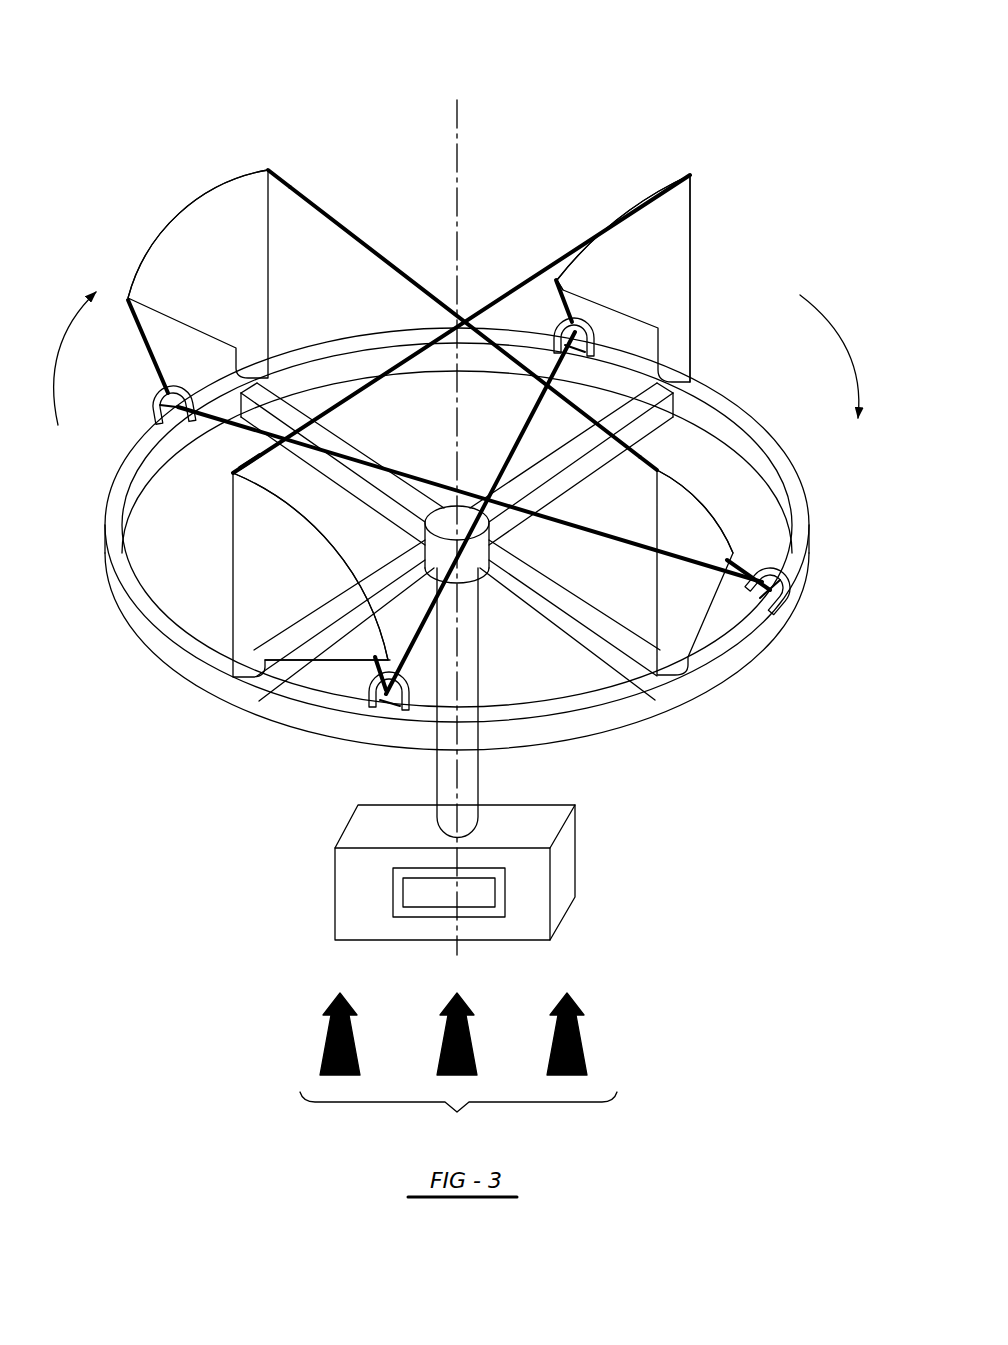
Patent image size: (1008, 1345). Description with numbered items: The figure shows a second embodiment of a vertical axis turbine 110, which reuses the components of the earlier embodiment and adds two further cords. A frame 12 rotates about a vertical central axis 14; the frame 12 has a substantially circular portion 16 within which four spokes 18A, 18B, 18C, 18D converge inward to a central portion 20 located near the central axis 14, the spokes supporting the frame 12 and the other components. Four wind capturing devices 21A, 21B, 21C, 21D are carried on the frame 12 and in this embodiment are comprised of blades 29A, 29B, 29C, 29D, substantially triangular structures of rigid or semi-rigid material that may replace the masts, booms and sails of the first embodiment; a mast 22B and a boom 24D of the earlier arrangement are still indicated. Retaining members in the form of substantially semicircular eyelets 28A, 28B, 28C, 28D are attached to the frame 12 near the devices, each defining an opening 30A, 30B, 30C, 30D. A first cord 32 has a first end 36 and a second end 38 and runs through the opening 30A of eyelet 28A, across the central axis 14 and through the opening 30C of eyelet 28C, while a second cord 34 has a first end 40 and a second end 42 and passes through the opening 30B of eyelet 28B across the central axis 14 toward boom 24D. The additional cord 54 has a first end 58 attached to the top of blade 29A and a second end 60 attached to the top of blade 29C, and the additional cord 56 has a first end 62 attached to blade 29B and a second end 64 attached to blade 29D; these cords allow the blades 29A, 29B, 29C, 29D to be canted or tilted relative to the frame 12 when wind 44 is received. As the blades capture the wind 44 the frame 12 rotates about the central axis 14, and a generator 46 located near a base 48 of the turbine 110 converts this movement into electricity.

The vertical axis turbine 110 is at (734, 82).
The frame 12 is at (724, 392).
The central axis 14 is at (458, 115).
The substantially circular portion 16 is at (747, 412).
The spoke 18A is at (306, 412).
The spoke 18B is at (557, 466).
The spoke 18C is at (608, 628).
The spoke 18D is at (384, 583).
The central portion 20 is at (442, 520).
The wind capturing device 21A is at (274, 283).
The wind capturing device 21B is at (695, 300).
The wind capturing device 21C is at (655, 533).
The wind capturing device 21D is at (230, 546).
The mast 22B is at (692, 202).
The boom 24D is at (410, 643).
The eyelet 28A is at (157, 413).
The eyelet 28B is at (563, 327).
The eyelet 28C is at (787, 580).
The eyelet 28D is at (363, 698).
The blade 29A is at (208, 246).
The blade 29B is at (624, 247).
The blade 29C is at (696, 553).
The blade 29D is at (288, 534).
The opening 30A is at (163, 407).
The opening 30B is at (567, 353).
The opening 30C is at (767, 593).
The opening 30D is at (393, 707).
The first cord 32 is at (205, 420).
The second cord 34 is at (513, 436).
The first end 36 is at (138, 320).
The second end 38 is at (767, 568).
The first end 40 is at (556, 282).
The second end 42 is at (364, 676).
The wind 44 is at (458, 1069).
The generator 46 is at (487, 893).
The base 48 is at (468, 822).
The cord 54 is at (413, 280).
The cord 56 is at (563, 290).
The first end 58 is at (272, 173).
The second end 60 is at (654, 472).
The first end 62 is at (667, 190).
The second end 64 is at (248, 455).